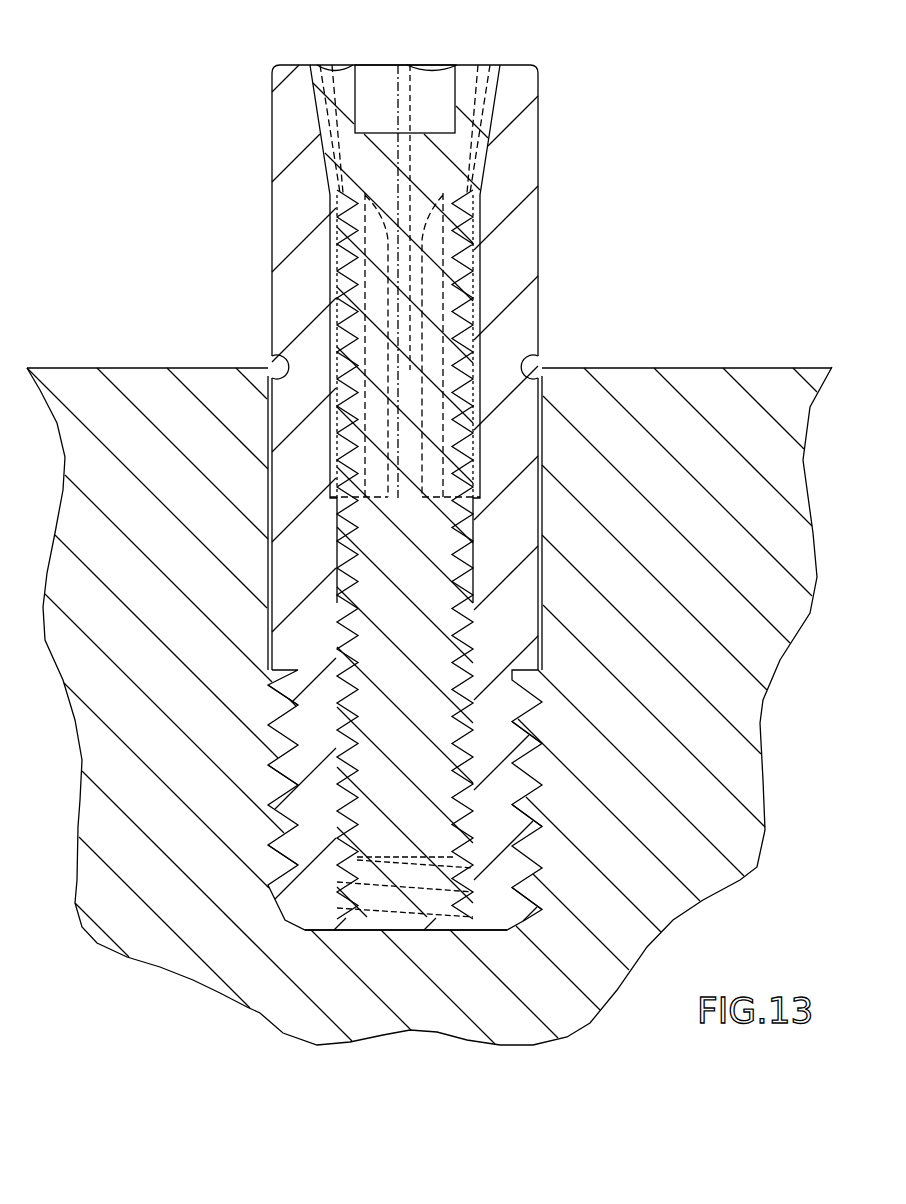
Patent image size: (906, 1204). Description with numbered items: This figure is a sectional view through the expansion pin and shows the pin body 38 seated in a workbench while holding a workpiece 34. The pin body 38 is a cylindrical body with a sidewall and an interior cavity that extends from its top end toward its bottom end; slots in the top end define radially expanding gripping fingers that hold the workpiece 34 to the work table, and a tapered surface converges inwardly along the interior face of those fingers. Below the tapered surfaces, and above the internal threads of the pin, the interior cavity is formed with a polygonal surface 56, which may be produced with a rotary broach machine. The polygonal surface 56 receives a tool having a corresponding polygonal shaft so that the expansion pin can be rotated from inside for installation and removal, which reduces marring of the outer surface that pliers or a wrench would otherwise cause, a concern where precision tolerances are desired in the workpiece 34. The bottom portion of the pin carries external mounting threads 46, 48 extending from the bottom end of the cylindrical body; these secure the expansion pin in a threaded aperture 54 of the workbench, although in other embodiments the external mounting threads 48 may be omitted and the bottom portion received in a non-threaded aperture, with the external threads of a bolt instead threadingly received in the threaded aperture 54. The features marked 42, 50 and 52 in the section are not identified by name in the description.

The workpiece 34 is at (703, 375).
The pin body 38 is at (285, 208).
The tapered bore portions 42 is at (393, 78).
The external mounting threads 46 is at (538, 358).
The external mounting threads 48 is at (446, 930).
The drive socket 50 is at (467, 63).
The external threads 52 is at (543, 492).
The threaded aperture 54 is at (290, 905).
The polygonal surface 56 is at (473, 303).